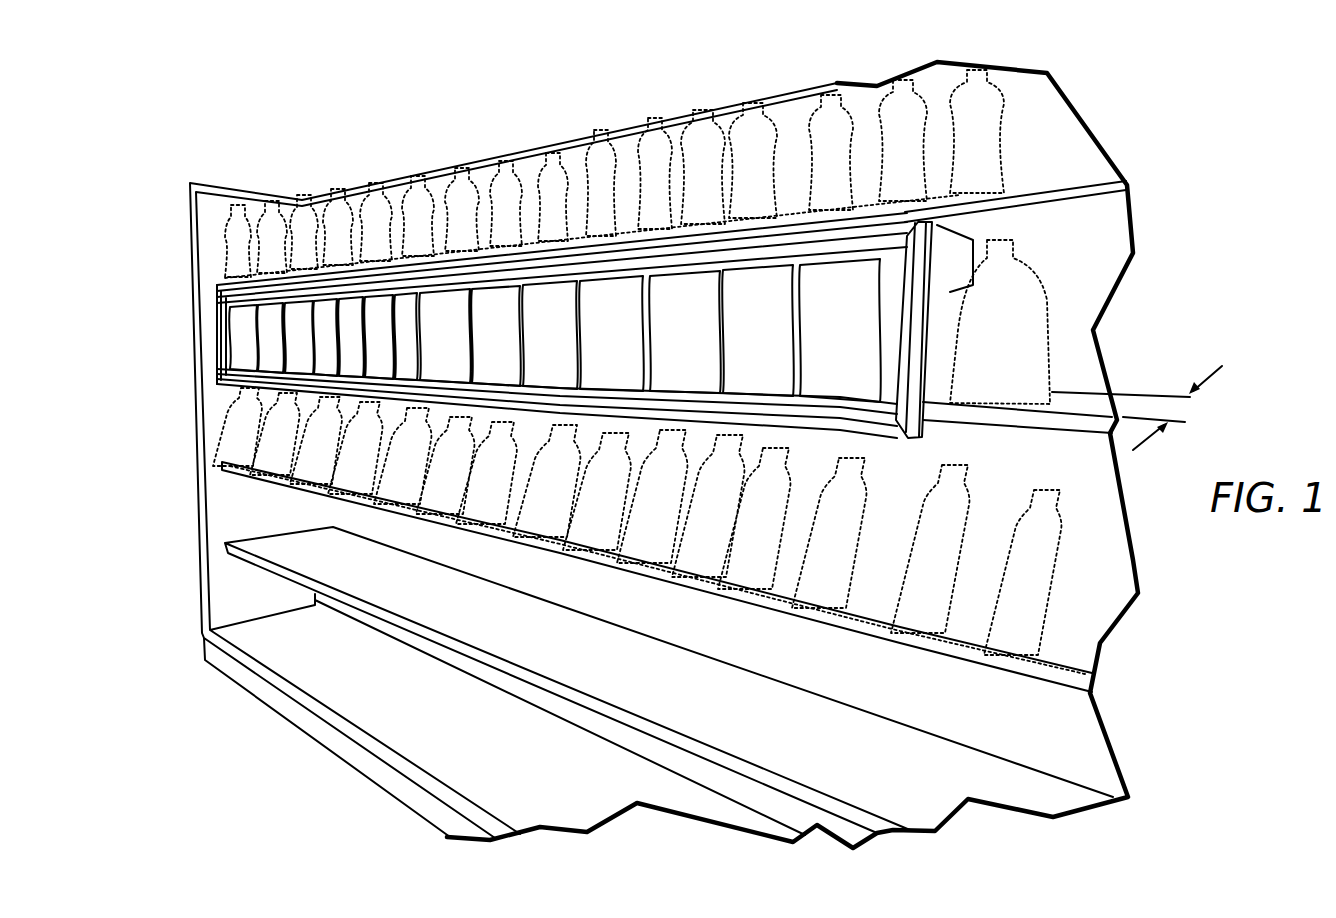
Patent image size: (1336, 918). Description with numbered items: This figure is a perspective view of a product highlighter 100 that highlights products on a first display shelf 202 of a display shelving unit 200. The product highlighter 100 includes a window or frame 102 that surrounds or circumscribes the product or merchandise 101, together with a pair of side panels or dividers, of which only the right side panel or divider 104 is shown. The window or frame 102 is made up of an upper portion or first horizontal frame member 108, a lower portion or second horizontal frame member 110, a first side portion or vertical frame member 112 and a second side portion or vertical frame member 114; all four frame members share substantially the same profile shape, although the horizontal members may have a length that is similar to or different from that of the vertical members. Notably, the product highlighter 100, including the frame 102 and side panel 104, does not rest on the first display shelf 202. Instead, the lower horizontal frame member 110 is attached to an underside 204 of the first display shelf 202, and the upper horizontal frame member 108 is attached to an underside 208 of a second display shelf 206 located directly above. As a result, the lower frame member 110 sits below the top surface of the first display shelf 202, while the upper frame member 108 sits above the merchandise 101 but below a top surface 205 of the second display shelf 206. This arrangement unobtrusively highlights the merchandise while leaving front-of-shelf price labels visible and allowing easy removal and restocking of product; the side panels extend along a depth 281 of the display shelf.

The product highlighter 100 is at (578, 353).
The product(s) or merchandise 101 is at (260, 342).
The window or frame 102 is at (551, 416).
The right side panel or divider 104 is at (953, 292).
The upper portion or first horizontal frame member 108 is at (658, 255).
The lower portion or second horizontal frame member 110 is at (780, 428).
The first side portion or vertical frame member 112 is at (912, 350).
The second side portion or vertical frame member 114 is at (217, 322).
The display shelving unit 200 is at (170, 450).
The first display shelf 202 is at (1115, 436).
The underside of first display shelf 204 is at (1040, 430).
The top surface of display shelf 205 is at (1073, 396).
The second display shelf 206 is at (1100, 196).
The underside of second display shelf 208 is at (1105, 204).
The depth of display shelf 281 is at (1177, 408).